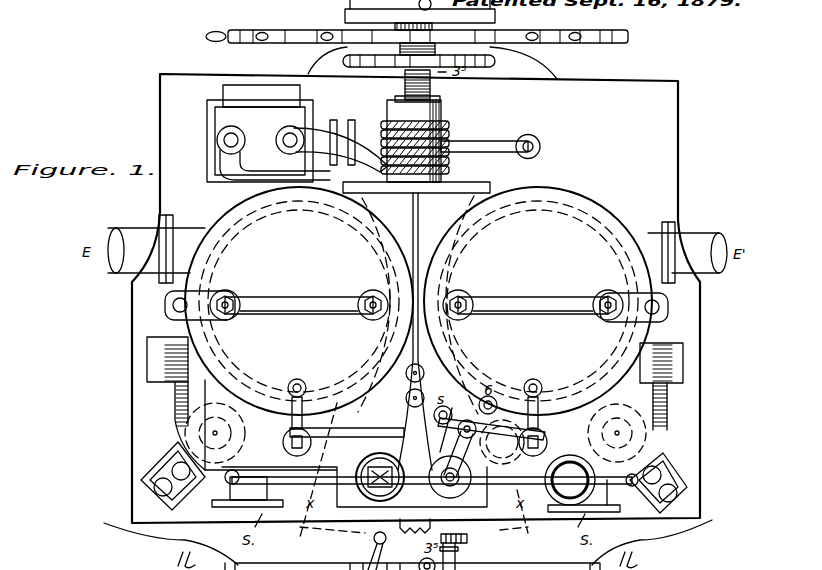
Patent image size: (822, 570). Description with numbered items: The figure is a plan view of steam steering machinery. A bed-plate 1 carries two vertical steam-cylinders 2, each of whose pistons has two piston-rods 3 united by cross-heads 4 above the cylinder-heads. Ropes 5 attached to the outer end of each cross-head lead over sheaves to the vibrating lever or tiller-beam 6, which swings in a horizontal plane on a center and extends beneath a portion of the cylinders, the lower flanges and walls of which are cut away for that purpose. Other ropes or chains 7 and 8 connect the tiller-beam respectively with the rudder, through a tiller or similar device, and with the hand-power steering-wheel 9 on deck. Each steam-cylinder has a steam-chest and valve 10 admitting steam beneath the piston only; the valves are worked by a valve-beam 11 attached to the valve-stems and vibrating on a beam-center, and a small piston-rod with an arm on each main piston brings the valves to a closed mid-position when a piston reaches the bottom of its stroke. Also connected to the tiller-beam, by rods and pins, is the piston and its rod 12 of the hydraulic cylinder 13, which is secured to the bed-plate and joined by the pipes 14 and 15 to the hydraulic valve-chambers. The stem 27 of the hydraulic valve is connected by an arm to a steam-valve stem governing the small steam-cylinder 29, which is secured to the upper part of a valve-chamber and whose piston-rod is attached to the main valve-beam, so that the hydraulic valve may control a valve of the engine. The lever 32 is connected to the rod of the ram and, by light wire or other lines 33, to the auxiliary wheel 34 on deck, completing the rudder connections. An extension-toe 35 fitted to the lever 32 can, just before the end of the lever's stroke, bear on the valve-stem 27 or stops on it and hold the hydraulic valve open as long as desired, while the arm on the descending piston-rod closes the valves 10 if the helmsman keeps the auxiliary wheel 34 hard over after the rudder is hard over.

The bed-plate 1 is at (416, 298).
The steam-cylinders 2 is at (418, 301).
The piston-rods 3 is at (300, 389).
The cross-heads 4 is at (416, 312).
The ropes 5 is at (380, 477).
The tiller-beam 6 is at (415, 531).
The ropes or chains 7 is at (147, 303).
The ropes or chains 8 is at (450, 120).
The hand-power steering-wheel 9 is at (417, 28).
The steam-chest and valve 10 is at (416, 442).
The valve-beam 11 is at (417, 424).
The piston and its rod 12 is at (376, 138).
The hydraulic cylinder 13 is at (251, 133).
The pipe 14 is at (275, 166).
The pipe 15 is at (341, 150).
The valve-stem 27 is at (467, 549).
The small steam-cylinder 29 is at (502, 442).
The lever 32 is at (431, 511).
The lines 33 is at (404, 88).
The auxiliary wheel 34 is at (432, 51).
The extension-toe 35 is at (460, 490).